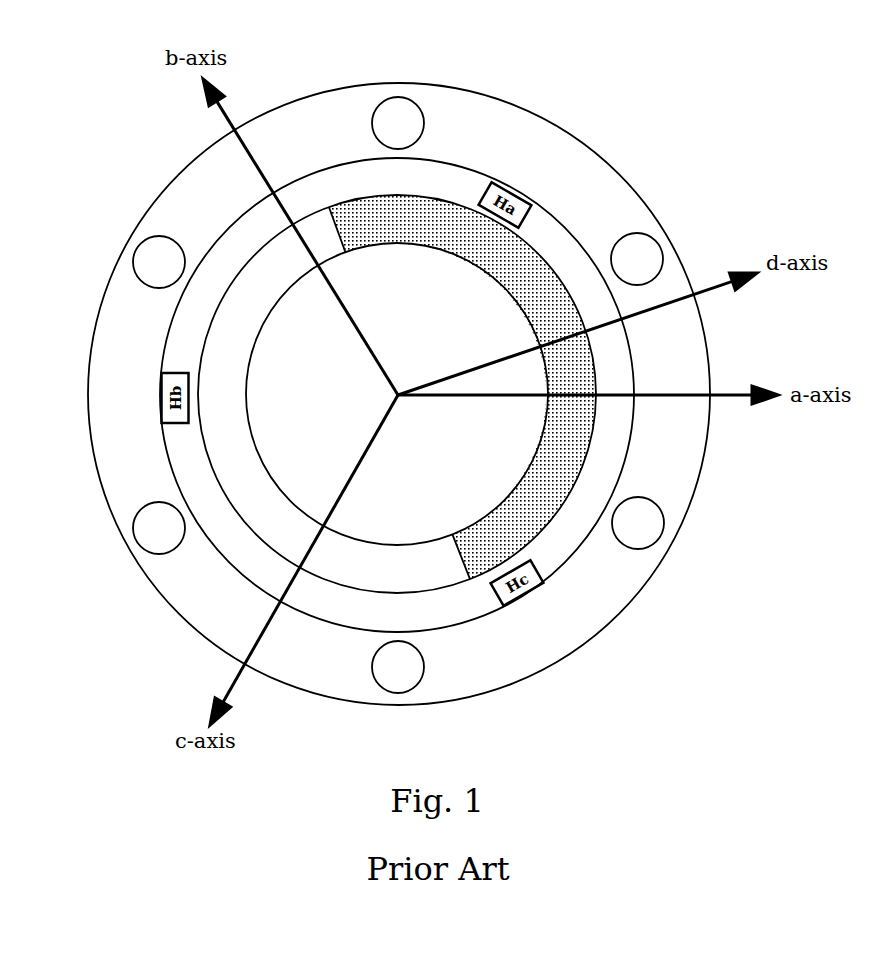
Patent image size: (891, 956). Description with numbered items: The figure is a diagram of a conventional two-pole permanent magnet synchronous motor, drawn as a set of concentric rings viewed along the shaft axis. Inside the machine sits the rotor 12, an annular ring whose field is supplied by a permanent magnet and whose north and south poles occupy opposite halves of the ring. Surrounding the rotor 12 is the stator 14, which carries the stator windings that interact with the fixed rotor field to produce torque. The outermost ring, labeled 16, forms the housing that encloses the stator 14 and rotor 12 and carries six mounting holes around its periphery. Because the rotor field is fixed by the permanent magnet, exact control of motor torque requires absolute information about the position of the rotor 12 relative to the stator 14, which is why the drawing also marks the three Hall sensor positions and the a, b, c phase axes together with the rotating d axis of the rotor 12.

The rotor 12 is at (588, 453).
The stator 14 is at (547, 660).
The electric motor 16 is at (712, 139).